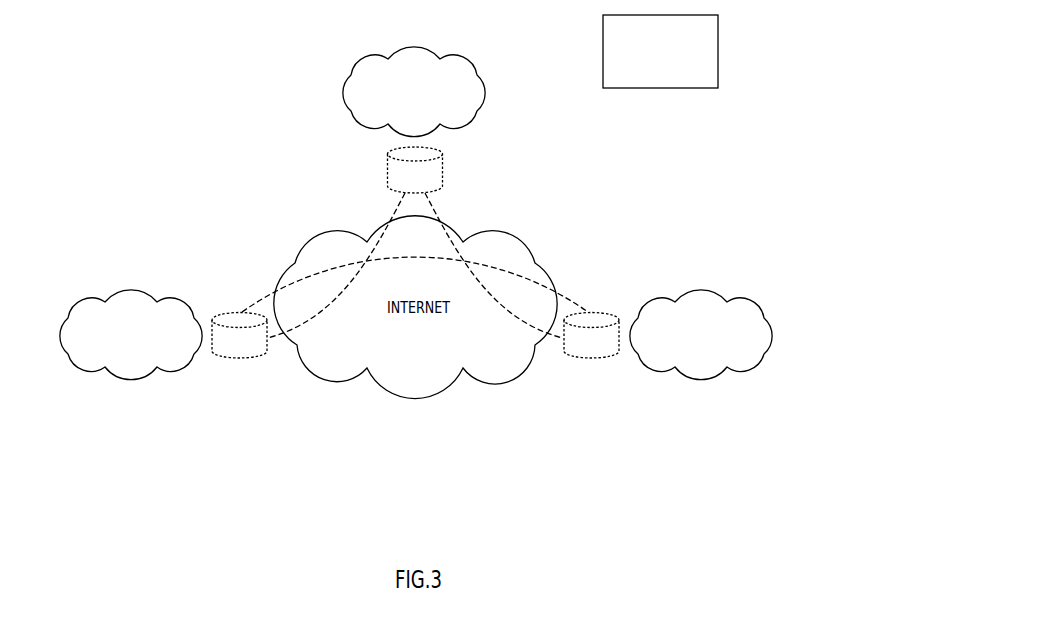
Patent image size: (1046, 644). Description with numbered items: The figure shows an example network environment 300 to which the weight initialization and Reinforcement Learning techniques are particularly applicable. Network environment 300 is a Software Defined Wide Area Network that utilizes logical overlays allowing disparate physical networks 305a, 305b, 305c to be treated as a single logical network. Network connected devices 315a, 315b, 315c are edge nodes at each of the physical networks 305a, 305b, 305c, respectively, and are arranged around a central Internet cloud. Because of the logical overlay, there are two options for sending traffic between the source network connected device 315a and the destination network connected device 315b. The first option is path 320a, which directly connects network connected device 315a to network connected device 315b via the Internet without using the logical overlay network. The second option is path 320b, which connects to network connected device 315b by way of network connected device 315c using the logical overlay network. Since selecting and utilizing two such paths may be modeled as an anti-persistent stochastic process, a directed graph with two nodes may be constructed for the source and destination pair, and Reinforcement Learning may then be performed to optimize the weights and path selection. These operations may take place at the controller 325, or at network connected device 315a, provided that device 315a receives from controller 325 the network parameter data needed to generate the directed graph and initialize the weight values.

The network environment 300 is at (185, 127).
The physical network 305a is at (143, 348).
The physical network 305b is at (715, 348).
The physical network 305c is at (428, 106).
The source network connected device 315a is at (231, 358).
The destination network connected device 315b is at (581, 358).
The network connected device 315c is at (443, 169).
The path 320a is at (262, 304).
The path 320b is at (398, 213).
The controller 325 is at (655, 89).